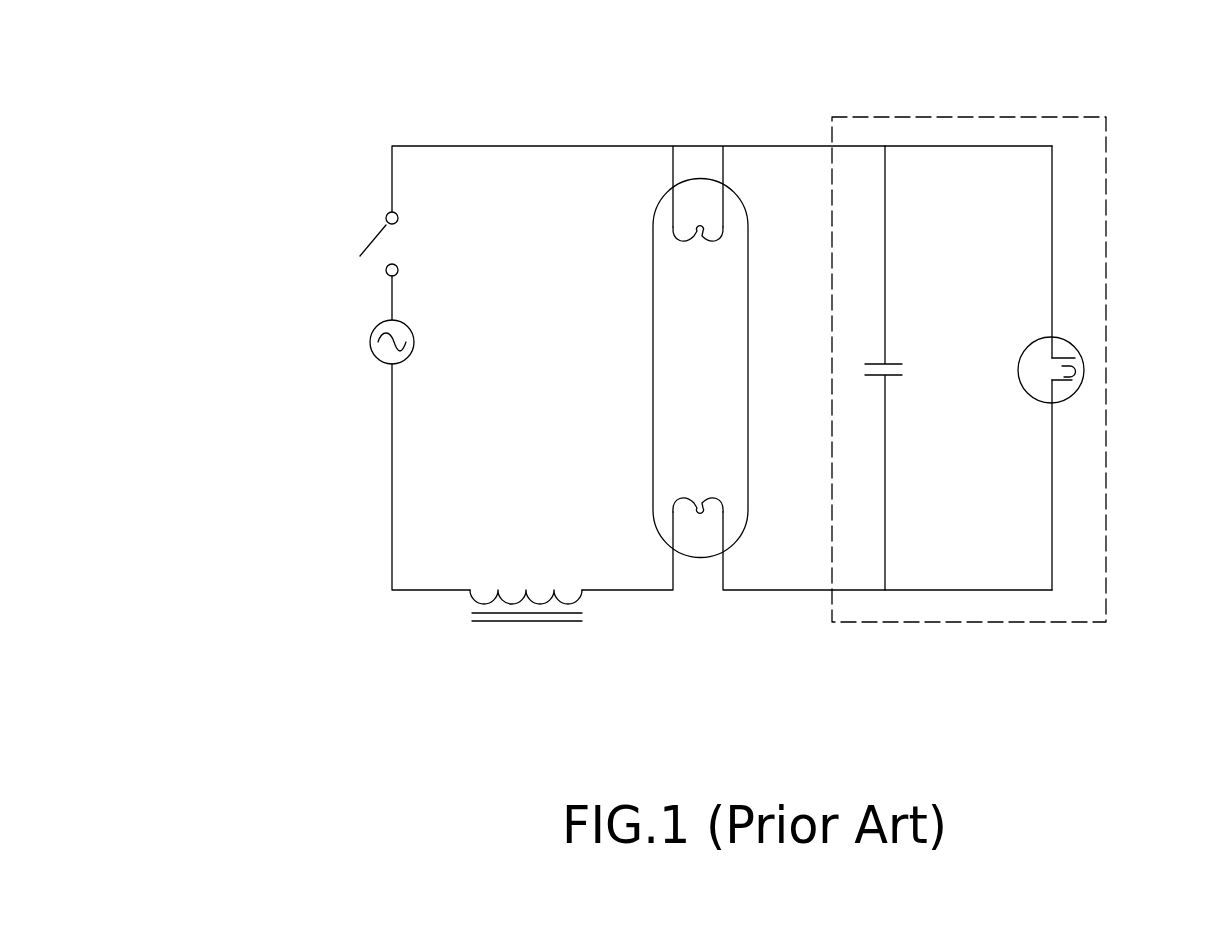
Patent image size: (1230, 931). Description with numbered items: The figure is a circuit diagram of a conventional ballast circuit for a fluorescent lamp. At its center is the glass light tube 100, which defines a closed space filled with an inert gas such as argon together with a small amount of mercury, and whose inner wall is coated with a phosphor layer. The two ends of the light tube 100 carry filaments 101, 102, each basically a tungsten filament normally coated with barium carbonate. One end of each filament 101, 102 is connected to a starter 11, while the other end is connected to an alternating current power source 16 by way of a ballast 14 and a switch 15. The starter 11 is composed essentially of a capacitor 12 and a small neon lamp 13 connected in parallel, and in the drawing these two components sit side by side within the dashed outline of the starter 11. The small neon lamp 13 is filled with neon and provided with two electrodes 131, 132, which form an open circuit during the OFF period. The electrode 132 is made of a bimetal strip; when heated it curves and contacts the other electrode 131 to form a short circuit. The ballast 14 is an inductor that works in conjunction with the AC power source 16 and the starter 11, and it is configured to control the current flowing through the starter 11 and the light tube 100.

The light tube 100 is at (641, 368).
The filament 101 is at (673, 514).
The filament 102 is at (673, 227).
The starter 11 is at (1049, 117).
The capacitor 12 is at (897, 362).
The small neon lamp 13 is at (1108, 368).
The electrode 131 is at (1070, 356).
The electrode 132 is at (1068, 385).
The ballast 14 is at (500, 623).
The switch 15 is at (369, 243).
The AC power source 16 is at (374, 355).